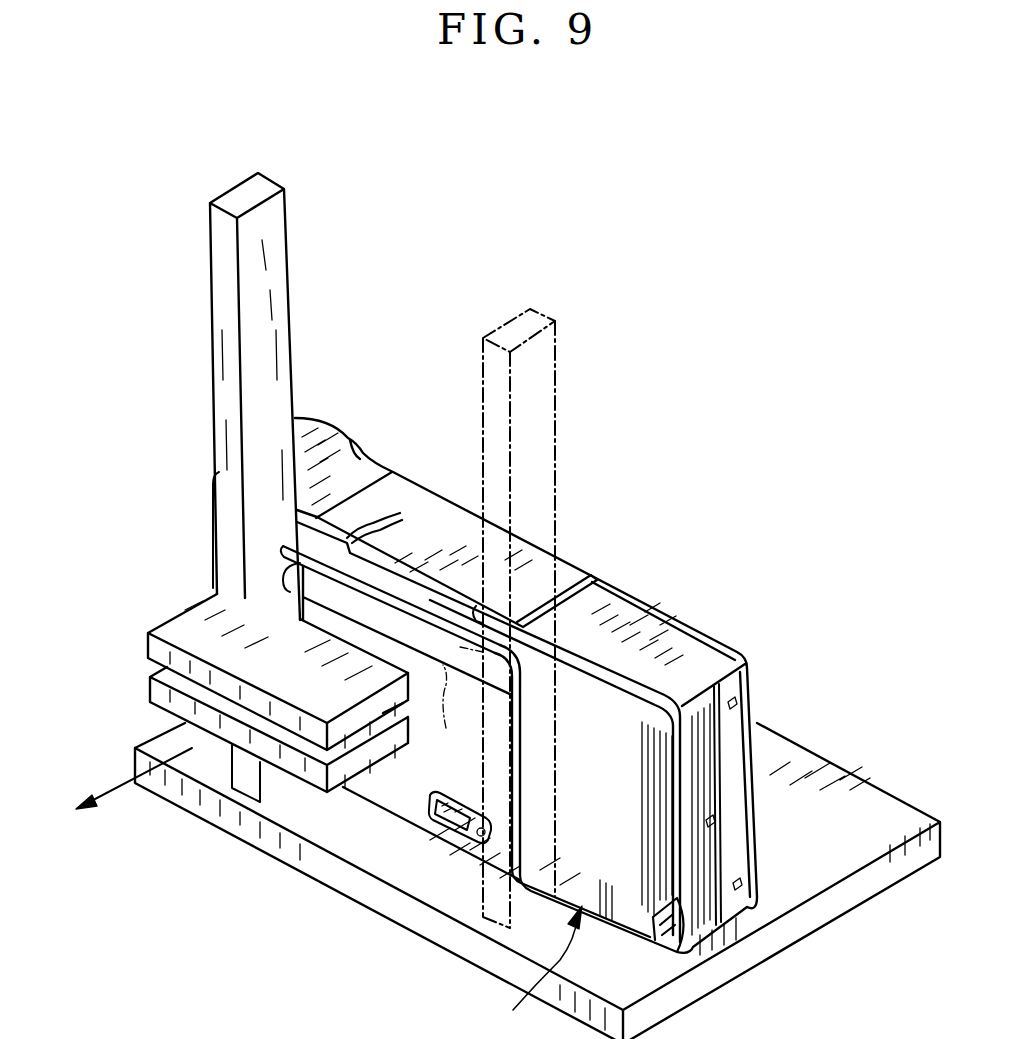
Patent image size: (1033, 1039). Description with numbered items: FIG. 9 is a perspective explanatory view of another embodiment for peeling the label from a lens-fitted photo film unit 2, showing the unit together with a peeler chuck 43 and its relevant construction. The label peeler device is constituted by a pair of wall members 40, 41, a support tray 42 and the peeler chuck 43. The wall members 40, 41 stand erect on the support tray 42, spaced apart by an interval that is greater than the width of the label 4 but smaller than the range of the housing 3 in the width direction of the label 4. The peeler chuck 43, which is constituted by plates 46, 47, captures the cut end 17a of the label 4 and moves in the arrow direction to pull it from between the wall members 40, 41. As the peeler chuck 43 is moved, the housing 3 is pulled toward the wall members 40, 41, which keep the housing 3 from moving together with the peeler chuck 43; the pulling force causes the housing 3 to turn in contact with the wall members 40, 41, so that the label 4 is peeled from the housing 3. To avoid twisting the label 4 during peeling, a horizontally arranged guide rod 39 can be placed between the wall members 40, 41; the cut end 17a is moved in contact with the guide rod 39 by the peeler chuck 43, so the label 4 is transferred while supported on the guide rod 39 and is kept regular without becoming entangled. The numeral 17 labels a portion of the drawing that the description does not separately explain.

The lens-fitted photo film unit 2 is at (543, 972).
The housing 3 is at (650, 637).
The label 4 is at (572, 577).
The holder 17 is at (414, 793).
The cut end 17a is at (286, 548).
The guide rod 39 is at (456, 707).
The wall member 40 is at (265, 189).
The wall member 41 is at (548, 316).
The support tray 42 is at (828, 790).
The peeler chuck 43 is at (307, 938).
The plate 46 is at (300, 727).
The plate 47 is at (318, 780).